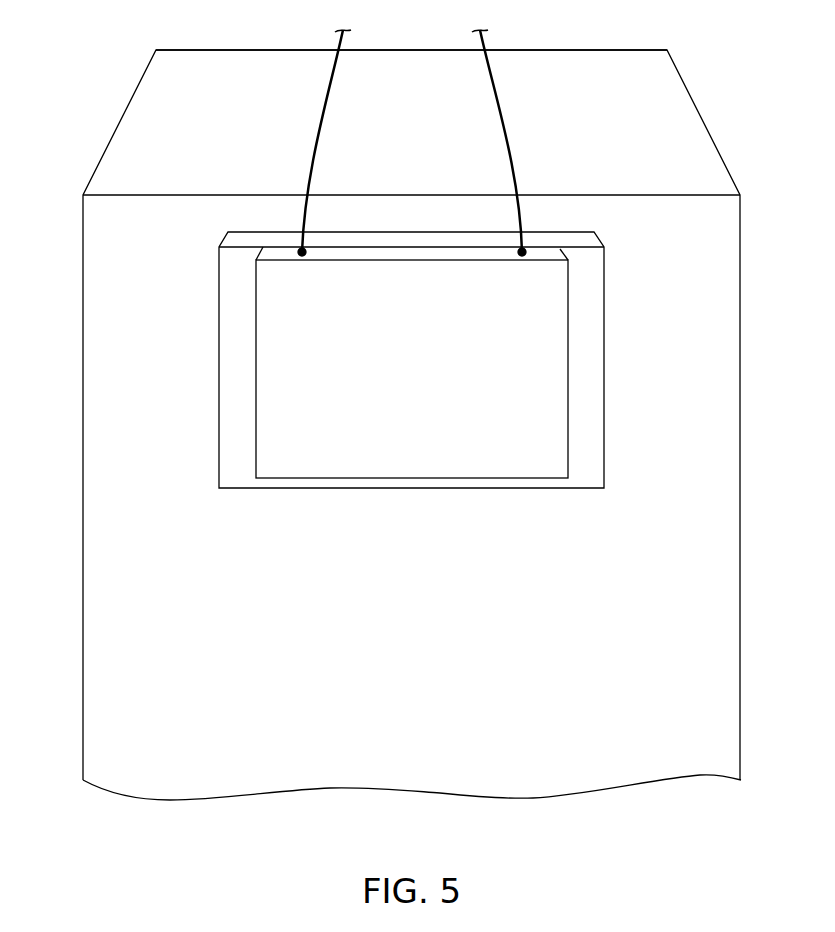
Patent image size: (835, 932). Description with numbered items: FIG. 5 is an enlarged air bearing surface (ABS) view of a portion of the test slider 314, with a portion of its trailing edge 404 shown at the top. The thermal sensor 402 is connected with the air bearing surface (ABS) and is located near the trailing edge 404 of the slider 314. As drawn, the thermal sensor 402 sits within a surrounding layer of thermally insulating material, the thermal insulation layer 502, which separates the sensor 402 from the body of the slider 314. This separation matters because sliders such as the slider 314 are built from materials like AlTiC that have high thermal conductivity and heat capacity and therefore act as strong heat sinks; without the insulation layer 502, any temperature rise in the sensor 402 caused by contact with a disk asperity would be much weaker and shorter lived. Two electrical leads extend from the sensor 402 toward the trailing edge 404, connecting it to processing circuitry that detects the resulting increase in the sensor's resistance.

The slider 314 is at (131, 100).
The trailing edge 404 is at (667, 100).
The thermal sensor 402 is at (465, 355).
The thermal insulation layer 502 is at (585, 271).
The air bearing surface ABS is at (553, 659).